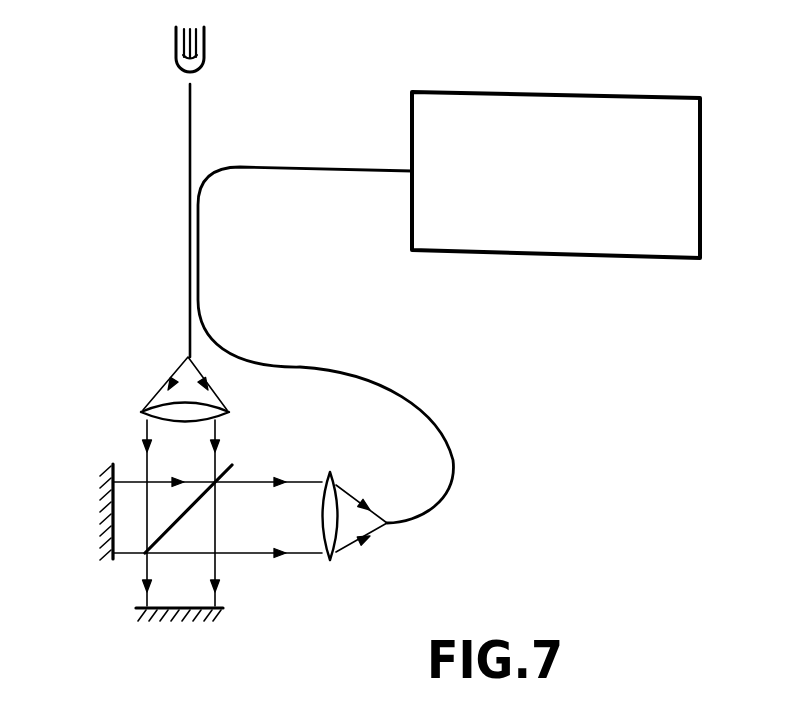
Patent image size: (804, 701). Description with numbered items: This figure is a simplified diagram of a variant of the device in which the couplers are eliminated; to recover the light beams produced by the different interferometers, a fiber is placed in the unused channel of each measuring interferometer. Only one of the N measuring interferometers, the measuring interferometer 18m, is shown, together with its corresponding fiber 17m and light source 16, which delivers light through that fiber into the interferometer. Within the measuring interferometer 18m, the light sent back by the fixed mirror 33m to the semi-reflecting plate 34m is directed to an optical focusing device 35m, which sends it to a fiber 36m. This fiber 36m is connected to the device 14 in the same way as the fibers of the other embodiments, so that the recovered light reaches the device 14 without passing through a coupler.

The device 14 is at (600, 80).
The light source 16 is at (205, 54).
The fiber 17m is at (190, 132).
The measuring interferometer 18m is at (219, 531).
The fixed mirror 33m is at (113, 494).
The semi-reflecting plate 34m is at (198, 502).
The optical focusing device 35m is at (333, 560).
The fiber 36m is at (447, 426).